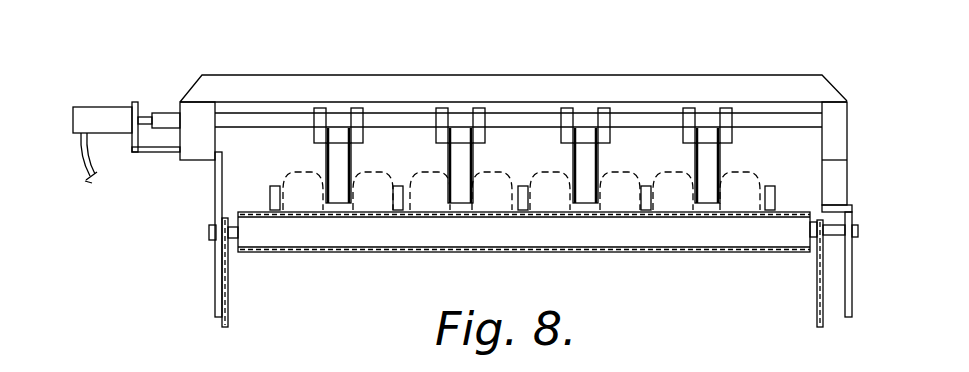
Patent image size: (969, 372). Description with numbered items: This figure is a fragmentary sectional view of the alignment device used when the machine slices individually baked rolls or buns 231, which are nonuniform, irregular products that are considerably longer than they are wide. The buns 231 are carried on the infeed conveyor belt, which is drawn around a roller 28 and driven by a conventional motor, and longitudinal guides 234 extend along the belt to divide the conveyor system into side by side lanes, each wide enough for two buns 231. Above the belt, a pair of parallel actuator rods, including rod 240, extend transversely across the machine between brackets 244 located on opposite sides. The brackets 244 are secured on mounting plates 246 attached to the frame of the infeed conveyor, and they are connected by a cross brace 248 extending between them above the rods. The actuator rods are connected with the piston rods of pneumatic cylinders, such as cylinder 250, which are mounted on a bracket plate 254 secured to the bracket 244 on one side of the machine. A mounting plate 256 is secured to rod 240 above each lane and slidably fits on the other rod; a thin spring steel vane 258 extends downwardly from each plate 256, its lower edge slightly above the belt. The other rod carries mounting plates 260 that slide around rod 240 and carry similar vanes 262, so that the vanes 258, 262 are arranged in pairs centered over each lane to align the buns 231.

The roller 28 is at (600, 240).
The buns 231 is at (378, 202).
The longitudinal guides 234 is at (271, 203).
The actuator rod 240 is at (258, 120).
The brackets 244 is at (195, 155).
The mounting plates 246 is at (220, 260).
The cross brace 248 is at (432, 80).
The pneumatic cylinder 250 is at (98, 110).
The bracket plate 254 is at (136, 103).
The mounting plate 256 is at (323, 108).
The vane 258 is at (327, 158).
The mounting plate 260 is at (353, 108).
The vane 262 is at (352, 162).